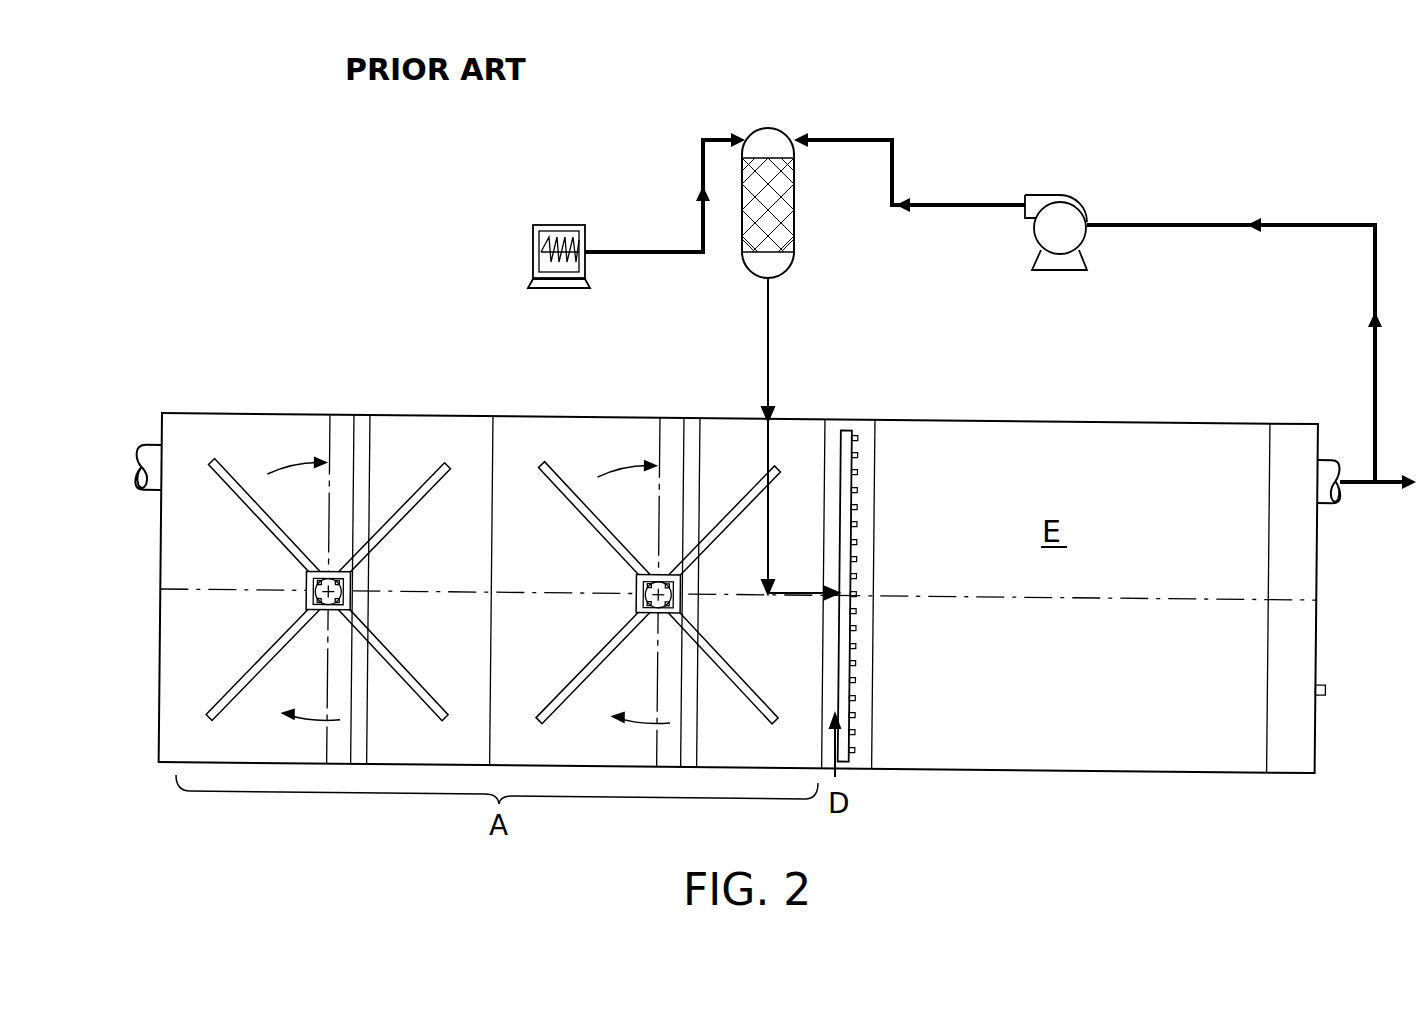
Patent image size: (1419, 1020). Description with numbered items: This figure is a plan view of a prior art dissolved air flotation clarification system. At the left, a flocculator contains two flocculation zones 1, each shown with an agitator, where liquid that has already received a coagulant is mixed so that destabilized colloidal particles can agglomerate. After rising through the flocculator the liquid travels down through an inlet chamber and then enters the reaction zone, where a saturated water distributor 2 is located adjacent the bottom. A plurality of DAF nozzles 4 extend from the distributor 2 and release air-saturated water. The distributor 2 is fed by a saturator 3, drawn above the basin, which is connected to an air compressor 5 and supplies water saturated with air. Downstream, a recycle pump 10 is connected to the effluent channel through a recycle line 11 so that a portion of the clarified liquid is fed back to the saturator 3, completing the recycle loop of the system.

The flocculation zone 1 is at (258, 424).
The saturated water distributor 2 is at (845, 430).
The saturator 3 is at (770, 128).
The DAF nozzles 4 is at (858, 466).
The air compressor 5 is at (533, 238).
The recycle pump 10 is at (1067, 195).
The recycle line 11 is at (1375, 372).